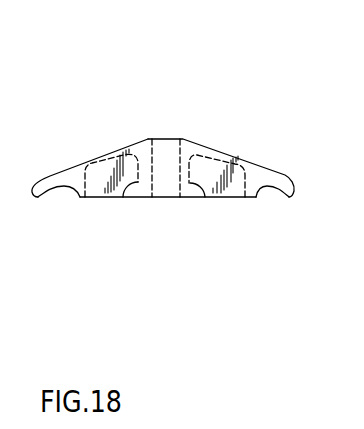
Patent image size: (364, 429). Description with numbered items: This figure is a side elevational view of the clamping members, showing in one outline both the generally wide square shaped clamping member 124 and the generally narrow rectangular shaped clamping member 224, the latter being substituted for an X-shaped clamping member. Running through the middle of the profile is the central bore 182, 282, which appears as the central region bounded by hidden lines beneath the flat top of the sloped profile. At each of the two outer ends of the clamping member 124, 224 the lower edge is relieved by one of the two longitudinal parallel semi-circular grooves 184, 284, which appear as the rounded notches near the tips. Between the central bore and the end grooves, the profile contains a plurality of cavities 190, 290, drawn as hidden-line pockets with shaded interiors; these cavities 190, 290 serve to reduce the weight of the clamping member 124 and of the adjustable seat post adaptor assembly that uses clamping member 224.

The clamping member 124 is at (196, 144).
The clamping member 224 is at (196, 144).
The central bore 182 is at (212, 136).
The central bore 282 is at (168, 139).
The longitudinal parallel semi-circular grooves 184 is at (197, 223).
The longitudinal parallel semi-circular grooves 284 is at (57, 197).
The cavities 190 is at (169, 207).
The cavities 290 is at (125, 197).